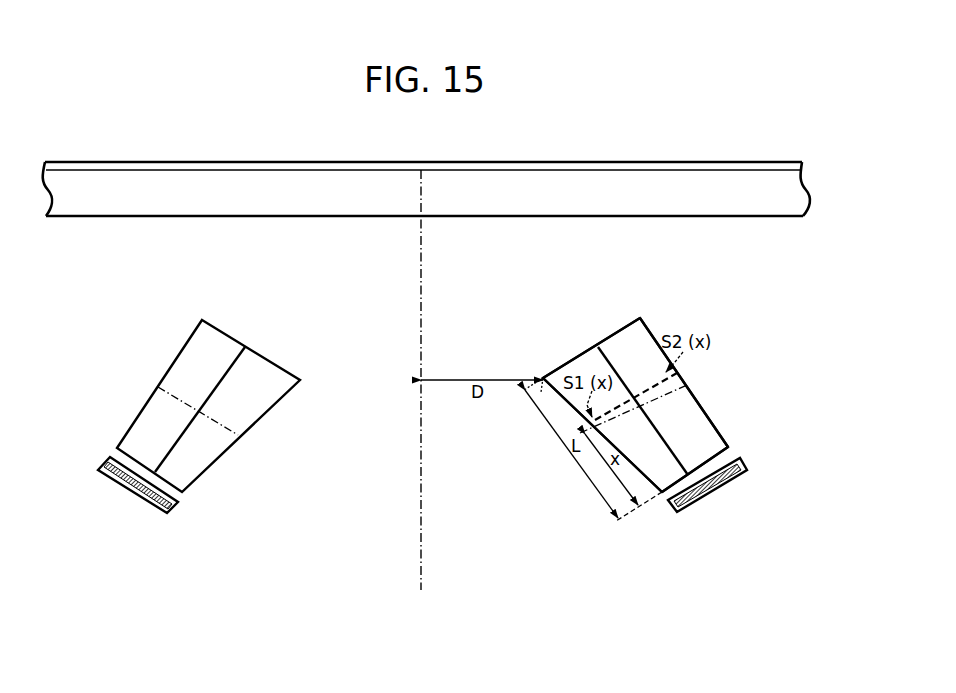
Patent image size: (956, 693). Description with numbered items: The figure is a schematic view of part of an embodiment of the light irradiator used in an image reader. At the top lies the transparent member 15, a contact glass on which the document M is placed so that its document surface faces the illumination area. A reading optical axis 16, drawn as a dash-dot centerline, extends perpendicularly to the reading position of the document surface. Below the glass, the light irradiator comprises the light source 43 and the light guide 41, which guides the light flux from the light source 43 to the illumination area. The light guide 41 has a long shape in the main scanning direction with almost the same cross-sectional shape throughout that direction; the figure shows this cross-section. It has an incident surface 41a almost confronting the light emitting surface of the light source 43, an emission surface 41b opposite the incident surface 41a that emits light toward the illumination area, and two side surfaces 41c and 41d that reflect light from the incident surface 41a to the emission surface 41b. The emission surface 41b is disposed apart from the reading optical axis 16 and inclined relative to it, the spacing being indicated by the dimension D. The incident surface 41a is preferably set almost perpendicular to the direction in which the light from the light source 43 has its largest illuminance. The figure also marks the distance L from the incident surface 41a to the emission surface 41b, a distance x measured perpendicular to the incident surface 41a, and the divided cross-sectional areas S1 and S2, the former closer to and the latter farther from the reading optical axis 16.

The transparent member 15 is at (637, 178).
The reading optical axis 16 is at (421, 543).
The light guide 41 is at (705, 408).
The incident surface 41a is at (662, 495).
The emission surface 41b is at (617, 330).
The side surface 41c is at (655, 330).
The side surface 41d is at (548, 373).
The light source 43 is at (738, 457).
The document M is at (531, 162).